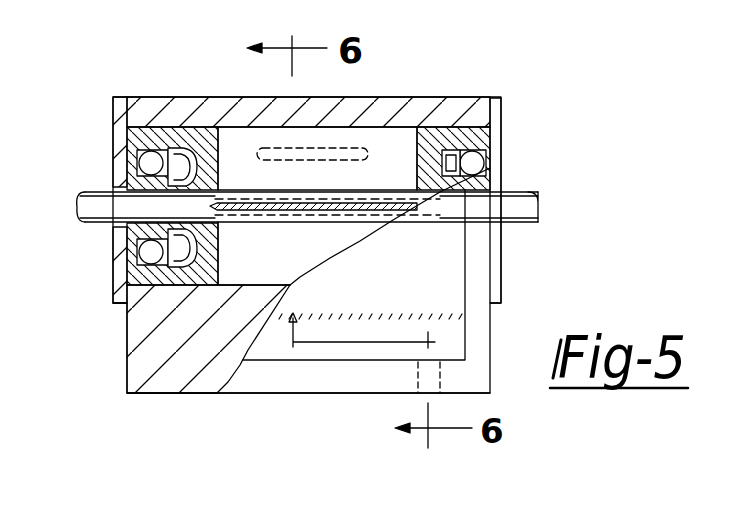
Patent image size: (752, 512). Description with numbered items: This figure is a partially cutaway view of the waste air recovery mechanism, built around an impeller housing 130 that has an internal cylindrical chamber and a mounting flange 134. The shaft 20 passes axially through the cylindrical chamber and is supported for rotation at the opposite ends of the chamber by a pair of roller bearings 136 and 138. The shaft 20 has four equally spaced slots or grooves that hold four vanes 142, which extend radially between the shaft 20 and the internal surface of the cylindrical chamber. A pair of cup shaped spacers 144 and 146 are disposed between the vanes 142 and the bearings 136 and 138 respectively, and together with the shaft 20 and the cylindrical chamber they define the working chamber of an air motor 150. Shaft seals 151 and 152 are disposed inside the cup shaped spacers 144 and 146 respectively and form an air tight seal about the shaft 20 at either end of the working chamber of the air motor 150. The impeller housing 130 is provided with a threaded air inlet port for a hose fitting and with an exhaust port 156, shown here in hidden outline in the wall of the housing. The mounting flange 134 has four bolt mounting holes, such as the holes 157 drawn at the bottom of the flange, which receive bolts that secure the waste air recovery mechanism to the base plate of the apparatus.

The shaft 20 is at (97, 225).
The impeller housing 130 is at (127, 337).
The mounting flange 134 is at (297, 378).
The roller bearing 136 is at (136, 135).
The roller bearing 138 is at (478, 178).
The vanes 142 is at (402, 179).
The cup shaped spacer 144 is at (203, 132).
The cup shaped spacer 146 is at (436, 137).
The air motor 150 is at (462, 30).
The shaft seal 151 is at (180, 146).
The shaft seal 152 is at (452, 154).
The exhaust port 156 is at (277, 146).
The bolt mounting holes 157 is at (424, 394).